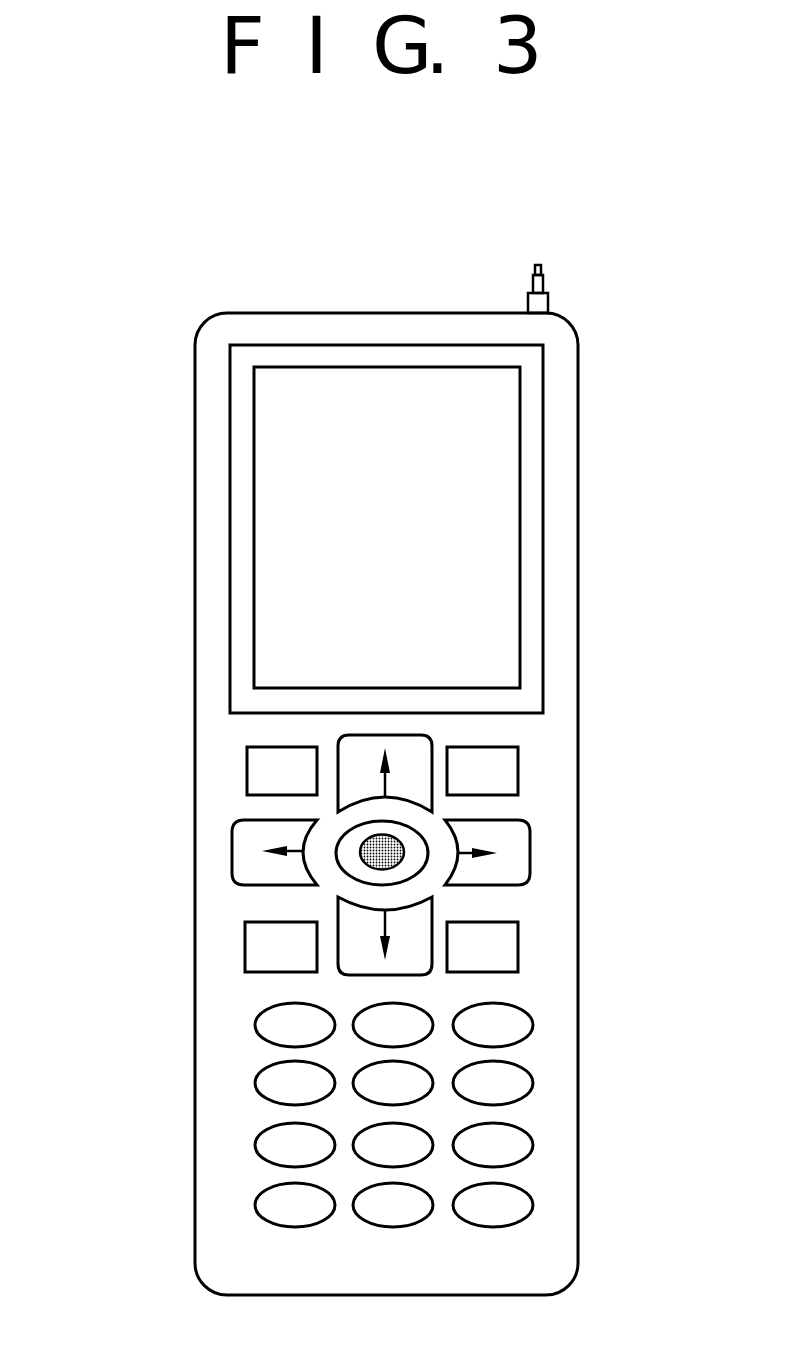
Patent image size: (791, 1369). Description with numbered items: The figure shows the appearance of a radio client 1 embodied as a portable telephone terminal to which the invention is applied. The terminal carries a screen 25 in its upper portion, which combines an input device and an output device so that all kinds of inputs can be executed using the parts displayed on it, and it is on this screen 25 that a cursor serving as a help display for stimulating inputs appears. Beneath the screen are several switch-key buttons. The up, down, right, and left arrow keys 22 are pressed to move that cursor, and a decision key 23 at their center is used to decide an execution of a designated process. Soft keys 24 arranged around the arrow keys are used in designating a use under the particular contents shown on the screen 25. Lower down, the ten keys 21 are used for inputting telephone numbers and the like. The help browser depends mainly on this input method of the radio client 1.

The radio client 1 is at (195, 384).
The ten keys 21 is at (528, 1150).
The arrow keys 22 is at (432, 747).
The decision key 23 is at (366, 868).
The soft keys 24 is at (247, 778).
The screen 25 is at (520, 508).